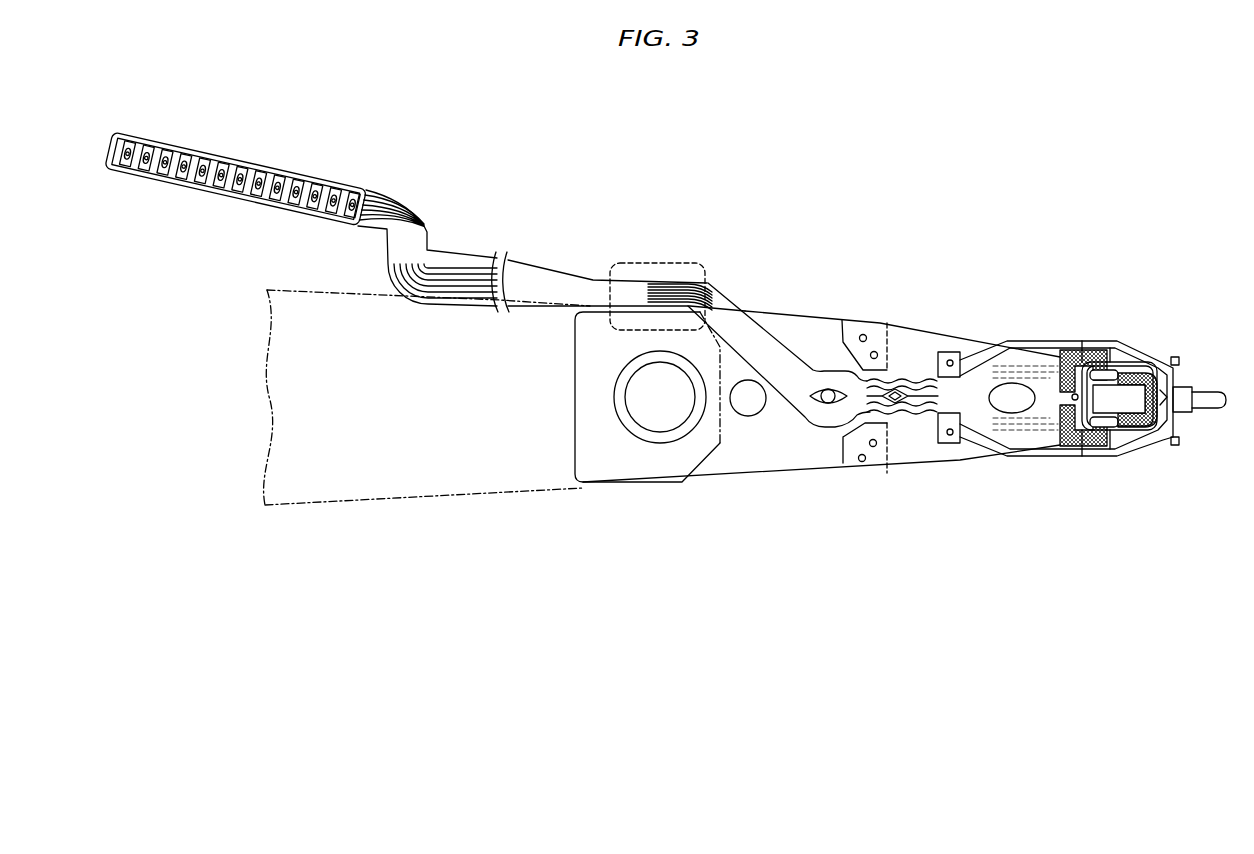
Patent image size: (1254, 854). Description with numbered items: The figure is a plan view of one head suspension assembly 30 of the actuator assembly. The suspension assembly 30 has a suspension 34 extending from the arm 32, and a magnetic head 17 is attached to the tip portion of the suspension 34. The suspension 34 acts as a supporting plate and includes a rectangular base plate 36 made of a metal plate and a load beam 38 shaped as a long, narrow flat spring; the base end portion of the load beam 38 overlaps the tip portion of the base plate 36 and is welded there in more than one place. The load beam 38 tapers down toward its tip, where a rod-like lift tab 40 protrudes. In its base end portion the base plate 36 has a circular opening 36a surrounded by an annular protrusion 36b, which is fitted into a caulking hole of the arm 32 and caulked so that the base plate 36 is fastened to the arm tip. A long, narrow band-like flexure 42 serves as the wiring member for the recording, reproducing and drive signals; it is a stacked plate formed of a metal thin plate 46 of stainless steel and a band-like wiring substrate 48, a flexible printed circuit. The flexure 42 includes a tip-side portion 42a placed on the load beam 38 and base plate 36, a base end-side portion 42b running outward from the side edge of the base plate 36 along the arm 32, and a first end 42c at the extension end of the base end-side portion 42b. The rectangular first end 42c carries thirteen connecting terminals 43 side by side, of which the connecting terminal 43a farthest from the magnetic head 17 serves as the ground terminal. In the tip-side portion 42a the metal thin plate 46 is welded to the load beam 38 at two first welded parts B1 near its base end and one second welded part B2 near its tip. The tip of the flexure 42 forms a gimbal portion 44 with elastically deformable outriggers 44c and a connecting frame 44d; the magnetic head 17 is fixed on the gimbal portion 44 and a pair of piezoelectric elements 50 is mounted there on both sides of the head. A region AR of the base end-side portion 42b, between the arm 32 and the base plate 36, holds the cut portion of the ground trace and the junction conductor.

The suspension assembly 30 is at (978, 250).
The arm 32 is at (436, 484).
The suspension 34 is at (817, 439).
The base plate 36 is at (817, 421).
The opening 36a is at (657, 424).
The protrusion 36b is at (632, 434).
The load beam 38 is at (881, 426).
The lift tab 40 is at (1201, 391).
The flexure 42 is at (764, 328).
The tip-side portion 42a is at (921, 382).
The base end-side portion 42b is at (549, 285).
The first end 42c is at (236, 185).
The connecting terminals 43 is at (336, 166).
The connecting terminal 43a is at (236, 178).
The gimbal portion 44 is at (1071, 408).
The outriggers 44c is at (1050, 341).
The connecting frame 44d is at (1141, 352).
The metal thin plate 46 is at (933, 418).
The wiring substrate 48 is at (469, 266).
The piezoelectric elements 50 is at (1102, 368).
The magnetic head 17 is at (1128, 402).
The first welded parts B1 is at (950, 359).
The second welded part B2 is at (1172, 414).
The region AR is at (675, 261).